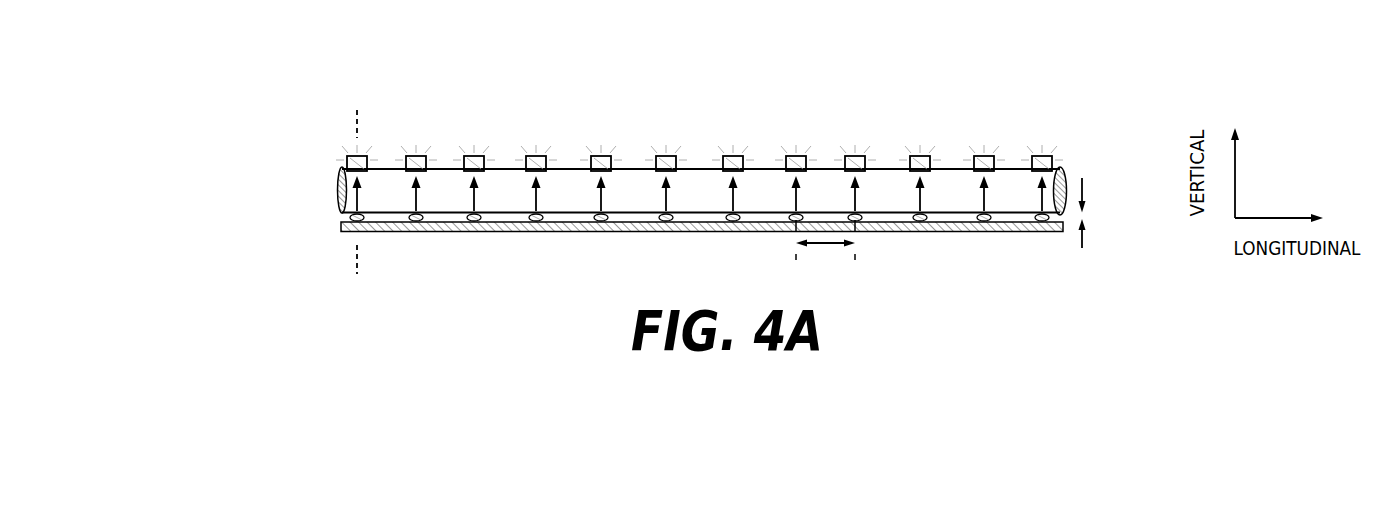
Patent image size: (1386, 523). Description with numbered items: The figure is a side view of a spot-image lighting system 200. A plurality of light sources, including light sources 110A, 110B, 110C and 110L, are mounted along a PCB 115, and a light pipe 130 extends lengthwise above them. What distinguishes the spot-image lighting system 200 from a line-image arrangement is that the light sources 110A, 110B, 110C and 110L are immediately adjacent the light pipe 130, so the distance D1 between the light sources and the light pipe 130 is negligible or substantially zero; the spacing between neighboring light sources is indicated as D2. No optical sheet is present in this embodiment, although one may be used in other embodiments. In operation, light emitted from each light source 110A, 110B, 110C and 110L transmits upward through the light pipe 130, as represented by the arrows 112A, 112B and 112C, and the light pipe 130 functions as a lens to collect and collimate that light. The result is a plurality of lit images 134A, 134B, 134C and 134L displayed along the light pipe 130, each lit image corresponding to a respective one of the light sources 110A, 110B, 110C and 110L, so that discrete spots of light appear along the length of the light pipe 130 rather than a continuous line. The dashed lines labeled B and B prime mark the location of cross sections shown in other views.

The spot-image lighting system 200 is at (228, 178).
The light pipe 130 is at (893, 181).
The PCB 115 is at (877, 229).
The lit image 134A is at (347, 158).
The lit image 134B is at (423, 157).
The lit image 134C is at (480, 157).
The lit image 134L is at (1050, 160).
The arrow 112A is at (353, 194).
The arrow 112B is at (417, 207).
The arrow 112C is at (475, 207).
The light source 110A is at (348, 220).
The light source 110B is at (416, 221).
The light source 110C is at (477, 221).
The light source 110L is at (1043, 223).
The distance D1 is at (1095, 213).
The longitudinal pitch between LEDs D2 is at (825, 246).